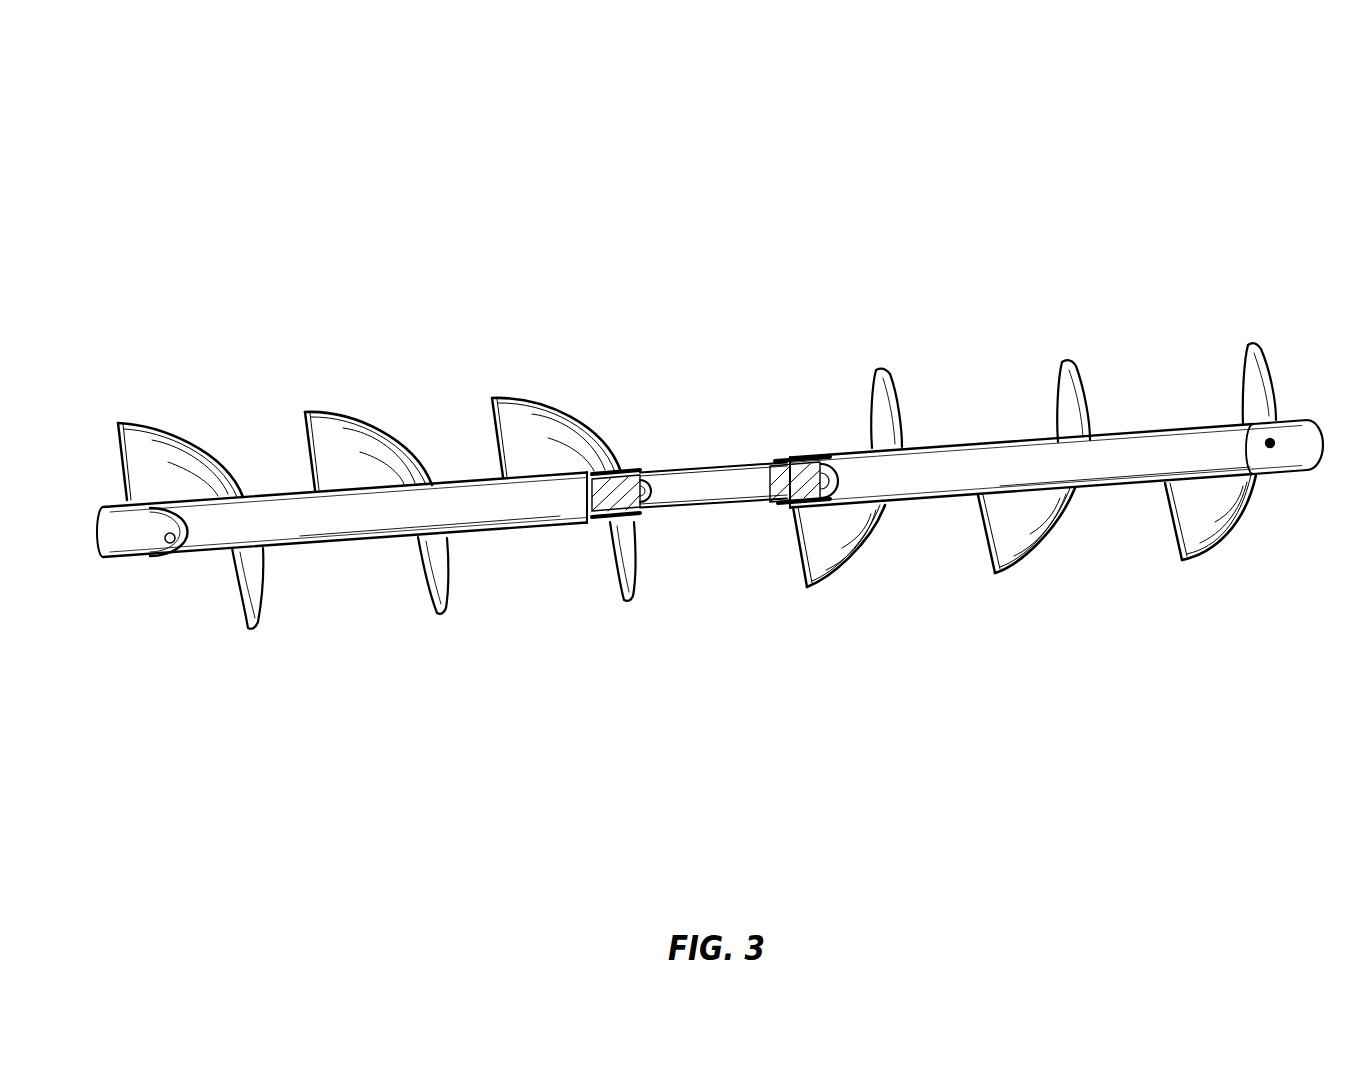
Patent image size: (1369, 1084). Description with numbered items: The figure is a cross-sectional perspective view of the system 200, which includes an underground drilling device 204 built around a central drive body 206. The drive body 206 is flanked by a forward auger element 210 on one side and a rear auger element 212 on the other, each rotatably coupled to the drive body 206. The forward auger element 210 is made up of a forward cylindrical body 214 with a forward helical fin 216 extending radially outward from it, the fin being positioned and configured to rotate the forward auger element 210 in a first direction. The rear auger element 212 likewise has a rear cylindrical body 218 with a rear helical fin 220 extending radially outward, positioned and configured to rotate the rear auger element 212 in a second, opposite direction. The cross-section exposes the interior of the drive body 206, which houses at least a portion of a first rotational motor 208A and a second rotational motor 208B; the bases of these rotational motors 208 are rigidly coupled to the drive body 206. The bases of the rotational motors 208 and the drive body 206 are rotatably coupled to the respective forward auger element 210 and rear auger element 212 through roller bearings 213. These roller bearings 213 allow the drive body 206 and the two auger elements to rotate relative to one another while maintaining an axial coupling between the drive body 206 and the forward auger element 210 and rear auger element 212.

The system 200 is at (153, 118).
The underground drilling device 204 is at (283, 240).
The drive body 206 is at (678, 397).
The rotational motor 208 is at (792, 635).
The first rotational motor 208A is at (788, 503).
The second rotational motor 208B is at (632, 507).
The forward auger element 210 is at (940, 360).
The rear auger element 212 is at (362, 360).
The roller bearing 213 is at (613, 467).
The forward cylindrical body 214 is at (1112, 488).
The forward helical fin 216 is at (998, 570).
The rear cylindrical body 218 is at (343, 542).
The rear helical fin 220 is at (437, 613).